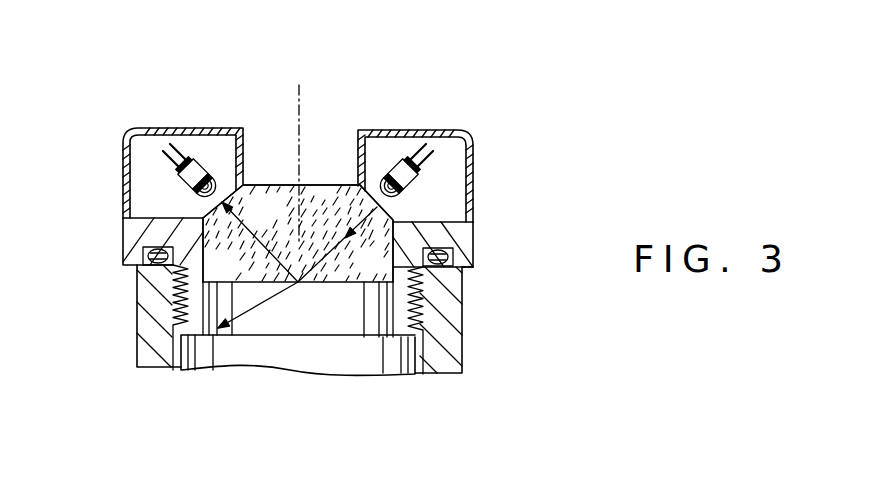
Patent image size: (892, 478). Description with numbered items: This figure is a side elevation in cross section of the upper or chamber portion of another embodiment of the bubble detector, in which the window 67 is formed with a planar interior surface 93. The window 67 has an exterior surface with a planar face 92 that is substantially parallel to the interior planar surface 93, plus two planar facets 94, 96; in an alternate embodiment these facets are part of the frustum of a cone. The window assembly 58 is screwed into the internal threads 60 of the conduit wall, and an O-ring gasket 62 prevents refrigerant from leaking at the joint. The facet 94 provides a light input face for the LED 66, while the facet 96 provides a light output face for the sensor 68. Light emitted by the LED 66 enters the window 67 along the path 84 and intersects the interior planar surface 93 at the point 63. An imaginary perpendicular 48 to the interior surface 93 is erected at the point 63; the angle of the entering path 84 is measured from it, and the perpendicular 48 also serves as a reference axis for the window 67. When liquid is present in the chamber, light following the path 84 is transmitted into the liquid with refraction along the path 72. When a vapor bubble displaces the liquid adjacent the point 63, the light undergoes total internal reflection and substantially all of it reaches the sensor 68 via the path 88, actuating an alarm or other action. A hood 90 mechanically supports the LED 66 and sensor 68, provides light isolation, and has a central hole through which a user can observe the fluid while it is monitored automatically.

The perpendicular 48 is at (299, 148).
The planar face 92 is at (332, 186).
The hood 90 is at (468, 143).
The sensor 68 is at (186, 186).
The LED 66 is at (410, 186).
The planar facet 96 is at (203, 217).
The planar facet 94 is at (390, 222).
The window assembly 58 is at (474, 256).
The O-ring gasket 62 is at (450, 272).
The internal threads 60 is at (425, 322).
The path 88 is at (223, 233).
The path 84 is at (373, 233).
The window 67 is at (301, 202).
The path 72 is at (252, 318).
The point 63 is at (302, 283).
The interior planar surface 93 is at (336, 283).